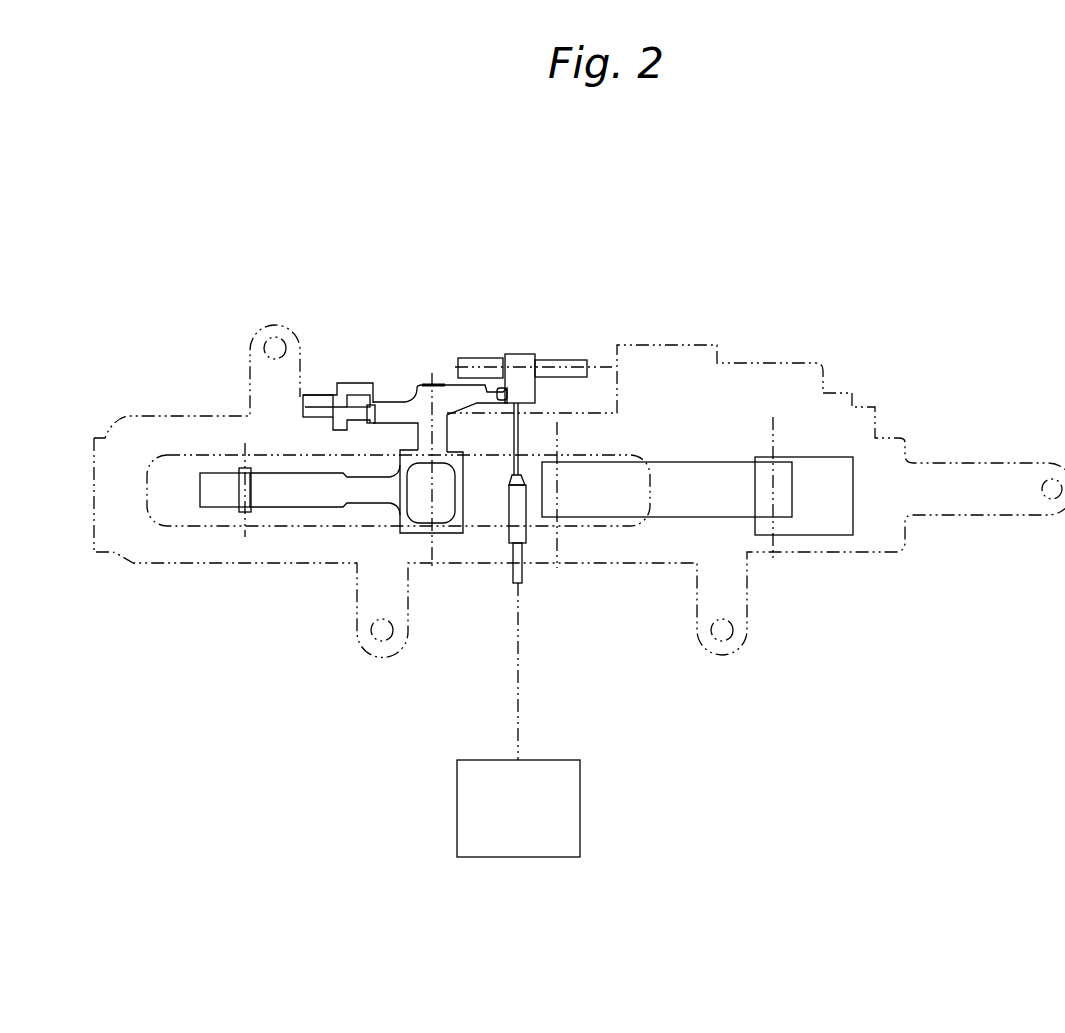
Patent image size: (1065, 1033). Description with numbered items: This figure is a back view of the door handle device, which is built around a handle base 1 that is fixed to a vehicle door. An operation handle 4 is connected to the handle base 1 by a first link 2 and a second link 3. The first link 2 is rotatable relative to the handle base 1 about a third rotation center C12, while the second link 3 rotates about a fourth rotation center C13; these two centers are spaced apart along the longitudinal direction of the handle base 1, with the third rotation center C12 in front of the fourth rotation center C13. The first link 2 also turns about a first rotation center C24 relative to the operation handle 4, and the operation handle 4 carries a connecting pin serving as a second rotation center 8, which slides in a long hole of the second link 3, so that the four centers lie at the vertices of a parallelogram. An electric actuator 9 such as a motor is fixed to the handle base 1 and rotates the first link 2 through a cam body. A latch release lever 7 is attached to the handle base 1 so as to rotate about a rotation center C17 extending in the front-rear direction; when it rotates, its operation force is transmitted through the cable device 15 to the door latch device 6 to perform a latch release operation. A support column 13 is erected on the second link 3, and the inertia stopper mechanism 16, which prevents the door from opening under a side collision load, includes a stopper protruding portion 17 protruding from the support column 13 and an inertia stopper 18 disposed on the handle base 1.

The handle base 1 is at (163, 553).
The first link 2 is at (732, 477).
The second link 3 is at (270, 497).
The operation handle 4 is at (296, 517).
The door latch device 6 is at (573, 810).
The latch release lever 7 is at (518, 357).
The second rotation center 8 is at (245, 448).
The electric actuator 9 is at (835, 520).
The support column 13 is at (415, 437).
The cable device 15 is at (520, 675).
The inertia stopper mechanism 16 is at (335, 372).
The stopper protruding portion 17 is at (390, 413).
The inertia stopper 18 is at (318, 398).
The third rotation center C12 is at (773, 553).
The fourth rotation center C13 is at (428, 383).
The rotation center C17 is at (565, 363).
The first rotation center C24 is at (553, 445).